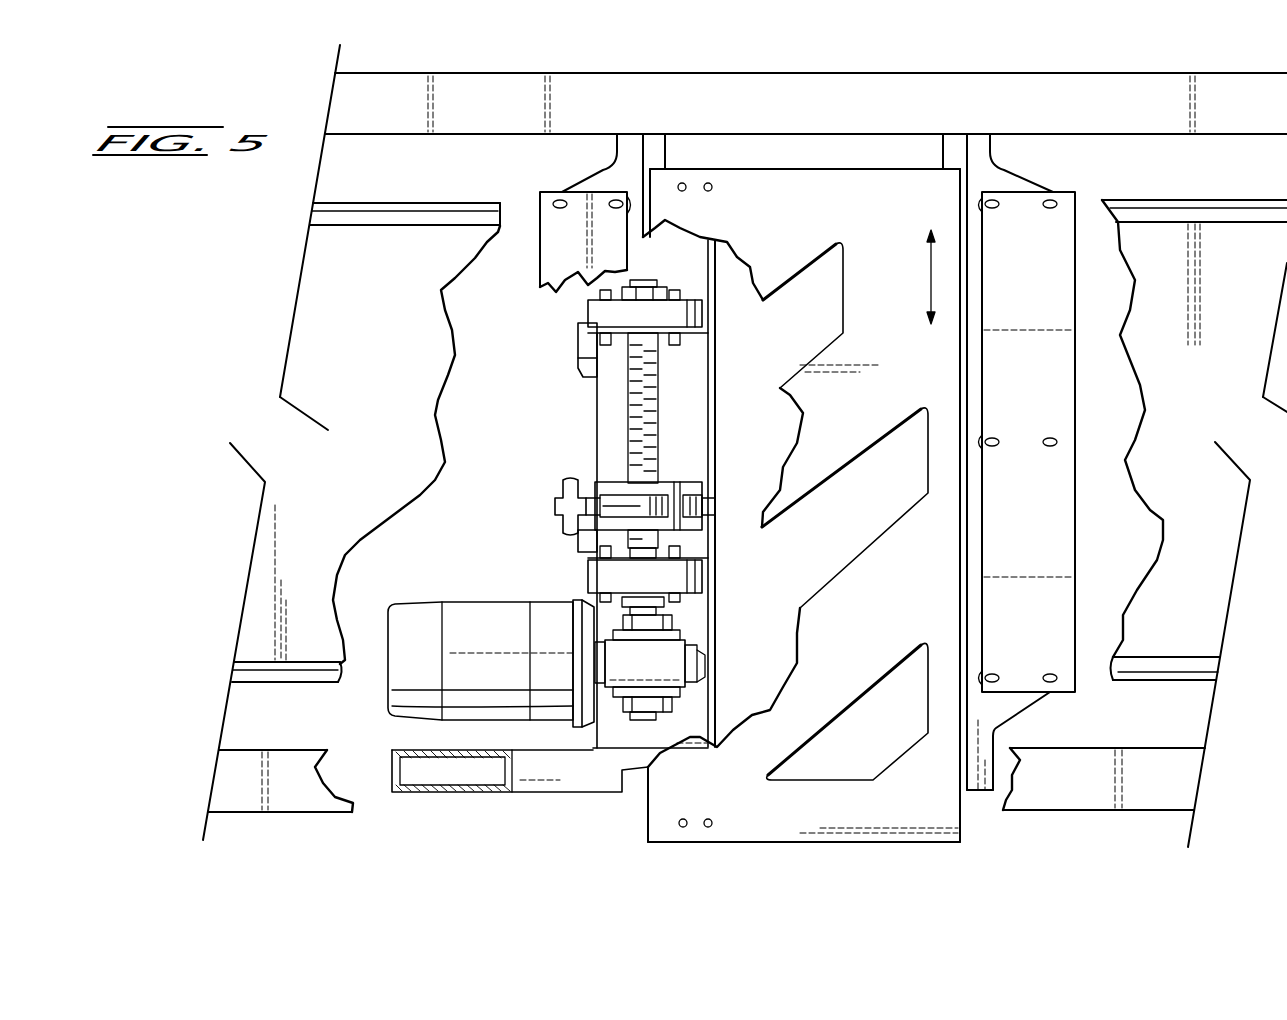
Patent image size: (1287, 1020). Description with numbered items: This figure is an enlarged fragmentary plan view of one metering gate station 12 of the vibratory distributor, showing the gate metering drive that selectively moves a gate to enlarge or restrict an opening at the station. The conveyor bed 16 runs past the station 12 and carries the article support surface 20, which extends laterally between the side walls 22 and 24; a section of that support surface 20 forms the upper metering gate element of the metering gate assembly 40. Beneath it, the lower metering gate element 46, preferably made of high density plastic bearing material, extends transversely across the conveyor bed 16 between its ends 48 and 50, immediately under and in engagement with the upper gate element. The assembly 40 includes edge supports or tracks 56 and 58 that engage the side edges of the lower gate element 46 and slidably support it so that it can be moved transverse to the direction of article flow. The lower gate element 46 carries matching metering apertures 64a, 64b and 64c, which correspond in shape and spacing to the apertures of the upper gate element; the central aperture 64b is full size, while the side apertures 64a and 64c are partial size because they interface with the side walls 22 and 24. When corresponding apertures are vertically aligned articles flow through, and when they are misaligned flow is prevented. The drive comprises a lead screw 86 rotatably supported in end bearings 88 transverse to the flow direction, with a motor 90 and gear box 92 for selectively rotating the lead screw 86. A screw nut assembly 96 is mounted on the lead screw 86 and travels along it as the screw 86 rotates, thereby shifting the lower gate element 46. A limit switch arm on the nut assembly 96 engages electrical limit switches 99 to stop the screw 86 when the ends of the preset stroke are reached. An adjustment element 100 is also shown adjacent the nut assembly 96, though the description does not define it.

The metering gate station 12 is at (760, 57).
The conveyor bed 16 is at (1081, 105).
The article support surface 20 is at (390, 412).
The side wall 22 is at (378, 227).
The side wall 24 is at (315, 662).
The metering gate assembly 40 is at (848, 152).
The lower metering gate element 46 is at (895, 333).
The end of lower metering gate element 48 is at (812, 192).
The end of lower metering gate element 50 is at (690, 797).
The edge support or track 56 is at (545, 243).
The edge support or track 58 is at (1023, 405).
The metering aperture 64a is at (802, 310).
The metering aperture 64b is at (868, 503).
The metering aperture 64c is at (880, 724).
The lead screw 86 is at (636, 412).
The end bearing 88 is at (600, 303).
The motor 90 is at (490, 668).
The gear box 92 is at (643, 670).
The screw nut assembly 96 is at (680, 470).
The electrical limit switch 99 is at (585, 369).
The adjustment knob 100 is at (588, 500).